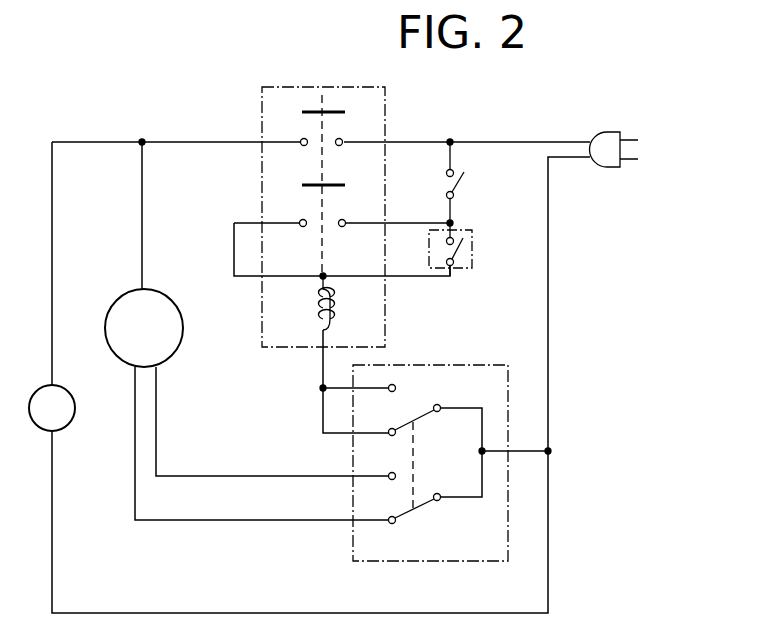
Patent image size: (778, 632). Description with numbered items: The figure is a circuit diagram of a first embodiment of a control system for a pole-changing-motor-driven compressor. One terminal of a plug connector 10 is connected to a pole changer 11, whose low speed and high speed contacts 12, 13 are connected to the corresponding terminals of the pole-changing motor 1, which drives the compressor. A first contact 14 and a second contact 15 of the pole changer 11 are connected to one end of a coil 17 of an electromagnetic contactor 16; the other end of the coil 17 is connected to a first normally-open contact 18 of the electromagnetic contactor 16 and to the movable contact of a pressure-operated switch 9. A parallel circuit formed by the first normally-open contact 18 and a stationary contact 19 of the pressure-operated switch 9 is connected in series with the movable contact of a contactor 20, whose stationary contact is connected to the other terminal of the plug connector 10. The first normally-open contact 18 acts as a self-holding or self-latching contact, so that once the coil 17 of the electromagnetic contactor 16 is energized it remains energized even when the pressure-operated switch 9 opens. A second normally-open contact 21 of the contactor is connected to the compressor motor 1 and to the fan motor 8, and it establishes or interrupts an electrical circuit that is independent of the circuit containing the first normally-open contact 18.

The pole-changing motor 1 is at (183, 322).
The fan motor 8 is at (75, 410).
The pressure-operated switch 9 is at (472, 255).
The plug connector 10 is at (604, 132).
The pole changer 11 is at (428, 562).
The low speed contact 12 is at (389, 525).
The high speed contact 13 is at (396, 476).
The first contact 14 is at (389, 437).
The second contact 15 is at (396, 388).
The electromagnetic contactor 16 is at (385, 92).
The coil 17 is at (316, 305).
The first normally-open contact 18 is at (303, 218).
The stationary contact 19 is at (457, 236).
The contactor 20 is at (448, 188).
The second normally-open contact 21 is at (303, 138).